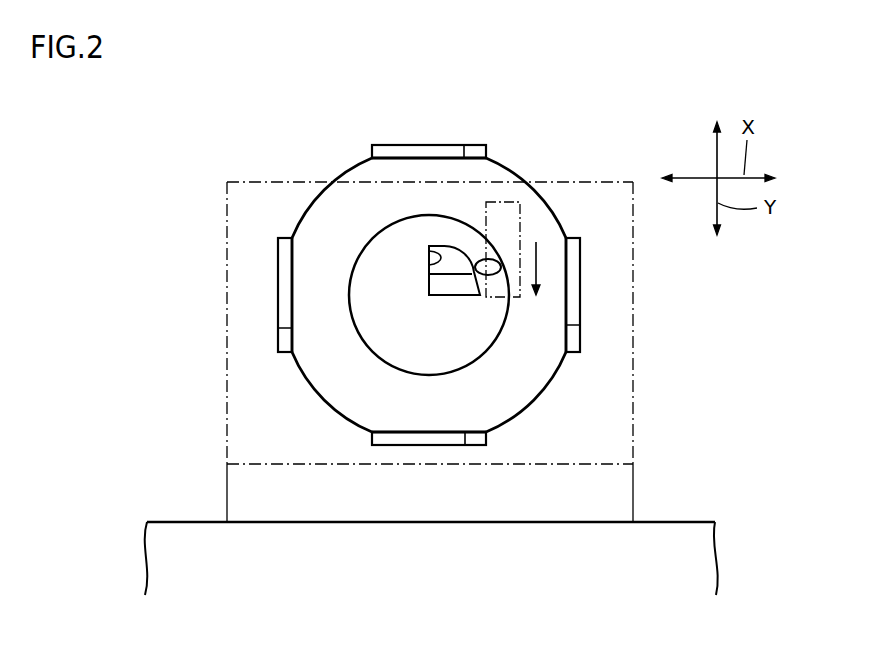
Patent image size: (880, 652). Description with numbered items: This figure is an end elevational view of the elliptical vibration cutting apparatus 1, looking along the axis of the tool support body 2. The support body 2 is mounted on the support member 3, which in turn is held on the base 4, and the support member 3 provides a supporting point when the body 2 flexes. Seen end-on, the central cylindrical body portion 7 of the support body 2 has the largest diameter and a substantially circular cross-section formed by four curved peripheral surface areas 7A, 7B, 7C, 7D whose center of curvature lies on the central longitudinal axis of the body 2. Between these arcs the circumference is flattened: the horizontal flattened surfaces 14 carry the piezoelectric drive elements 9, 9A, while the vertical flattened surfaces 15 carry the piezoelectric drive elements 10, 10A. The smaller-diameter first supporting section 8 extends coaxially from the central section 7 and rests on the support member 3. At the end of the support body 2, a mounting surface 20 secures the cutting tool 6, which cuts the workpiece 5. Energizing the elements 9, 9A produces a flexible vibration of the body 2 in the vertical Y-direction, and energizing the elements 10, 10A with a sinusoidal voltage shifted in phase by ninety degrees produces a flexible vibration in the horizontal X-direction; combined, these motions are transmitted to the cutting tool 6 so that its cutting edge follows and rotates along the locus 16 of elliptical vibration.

The elliptical vibration cutting apparatus 1 is at (631, 89).
The tool support body 2 is at (537, 416).
The support member 3 is at (243, 198).
The base 4 is at (703, 560).
The workpiece 5 is at (504, 205).
The cutting tool 6 is at (445, 284).
The central cylindrical body portion 7 is at (427, 284).
The curved peripheral surface area 7A is at (544, 200).
The curved peripheral surface area 7B is at (548, 386).
The curved peripheral surface area 7C is at (333, 411).
The curved peripheral surface area 7D is at (314, 200).
The first supporting section 8 is at (367, 346).
The piezoelectric drive element 9 is at (406, 445).
The piezoelectric drive element 9A is at (402, 145).
The piezoelectric drive element 10 is at (278, 301).
The piezoelectric drive element 10A is at (580, 283).
The horizontal flattened surface 14 is at (464, 145).
The vertical flattened surface 15 is at (278, 328).
The locus of elliptical vibration 16 is at (487, 262).
The mounting surface 20 is at (429, 251).